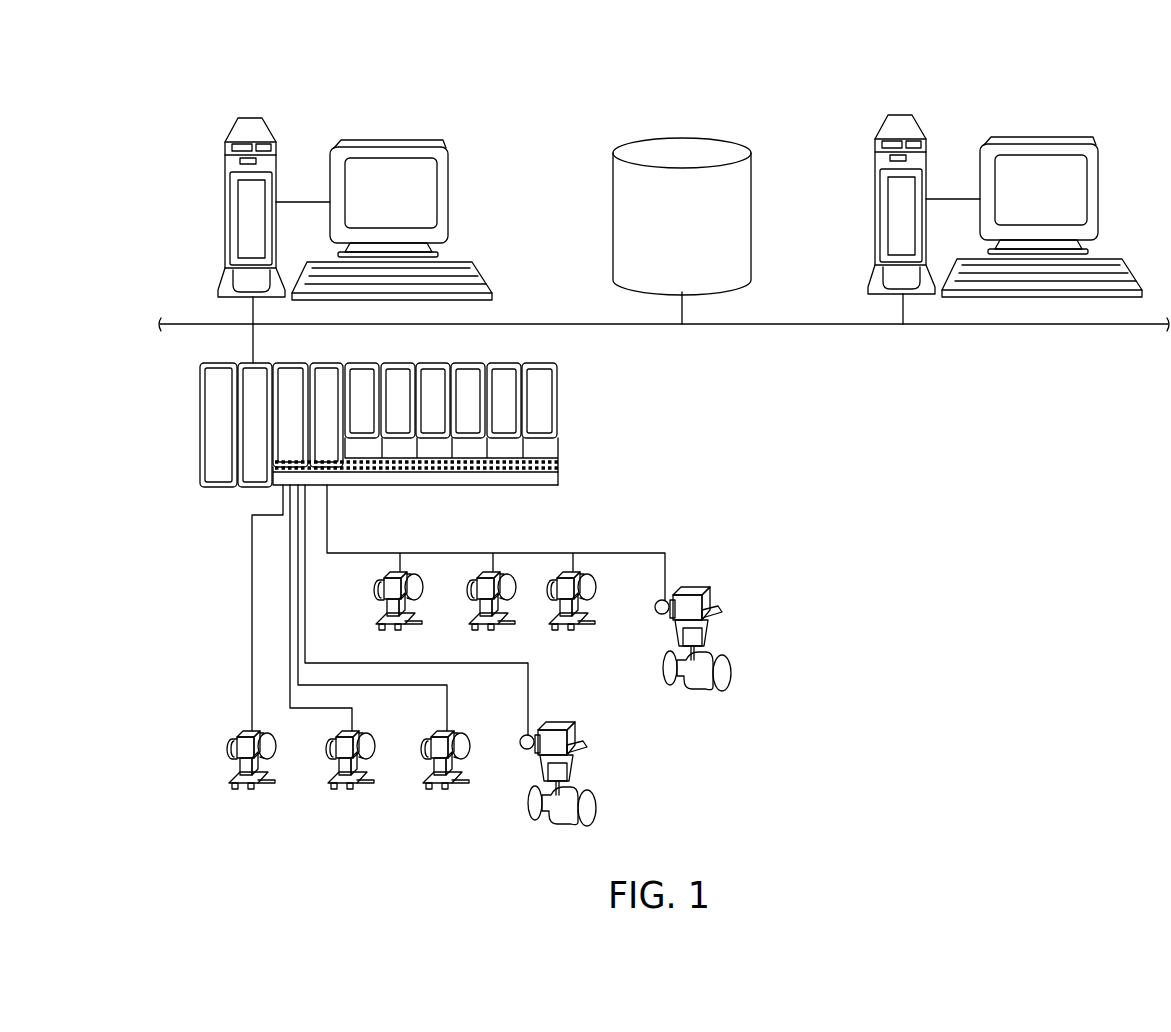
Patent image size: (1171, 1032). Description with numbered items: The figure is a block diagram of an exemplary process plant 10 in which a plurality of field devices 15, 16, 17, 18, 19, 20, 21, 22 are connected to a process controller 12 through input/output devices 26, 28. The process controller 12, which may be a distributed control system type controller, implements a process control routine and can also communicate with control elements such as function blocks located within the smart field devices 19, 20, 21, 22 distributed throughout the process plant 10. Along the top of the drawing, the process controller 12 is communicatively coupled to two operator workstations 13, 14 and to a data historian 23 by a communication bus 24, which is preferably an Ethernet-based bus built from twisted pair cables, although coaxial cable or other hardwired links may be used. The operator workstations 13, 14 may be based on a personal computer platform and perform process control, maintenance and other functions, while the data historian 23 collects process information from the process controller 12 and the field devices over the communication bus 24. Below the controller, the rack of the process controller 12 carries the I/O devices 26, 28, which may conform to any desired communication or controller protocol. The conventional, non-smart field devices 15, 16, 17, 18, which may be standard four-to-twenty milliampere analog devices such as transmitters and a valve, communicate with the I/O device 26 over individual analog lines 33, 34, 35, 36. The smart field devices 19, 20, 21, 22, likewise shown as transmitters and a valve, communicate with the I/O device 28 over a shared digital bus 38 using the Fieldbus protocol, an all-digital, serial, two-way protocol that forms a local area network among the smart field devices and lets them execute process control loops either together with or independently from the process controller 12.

The process plant 10 is at (553, 88).
The process controller 12 is at (379, 410).
The operator workstation 13 is at (228, 160).
The operator workstation 14 is at (875, 170).
The conventional field device 15 is at (232, 770).
The conventional field device 16 is at (330, 772).
The conventional field device 17 is at (427, 772).
The conventional field device 18 is at (548, 758).
The smart field device 19 is at (405, 575).
The smart field device 20 is at (498, 575).
The smart field device 21 is at (580, 575).
The smart field device 22 is at (690, 587).
The data historian 23 is at (613, 175).
The communication bus 24 is at (605, 325).
The I/O device 26 is at (290, 363).
The I/O device 28 is at (337, 363).
The analog line 33 is at (250, 592).
The analog line 34 is at (290, 578).
The analog line 35 is at (373, 688).
The analog line 36 is at (470, 665).
The digital bus 38 is at (328, 520).